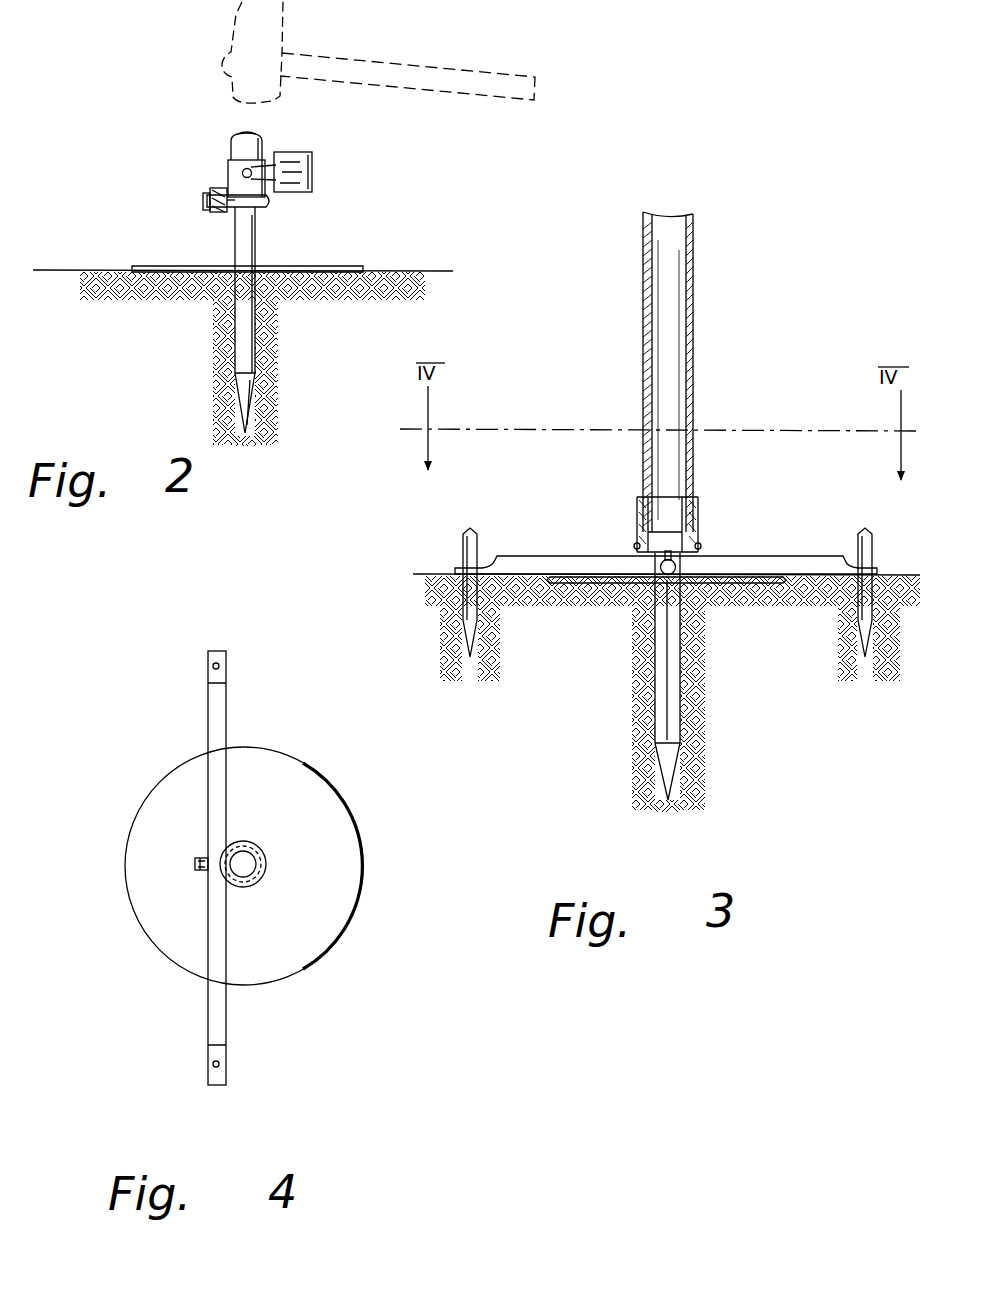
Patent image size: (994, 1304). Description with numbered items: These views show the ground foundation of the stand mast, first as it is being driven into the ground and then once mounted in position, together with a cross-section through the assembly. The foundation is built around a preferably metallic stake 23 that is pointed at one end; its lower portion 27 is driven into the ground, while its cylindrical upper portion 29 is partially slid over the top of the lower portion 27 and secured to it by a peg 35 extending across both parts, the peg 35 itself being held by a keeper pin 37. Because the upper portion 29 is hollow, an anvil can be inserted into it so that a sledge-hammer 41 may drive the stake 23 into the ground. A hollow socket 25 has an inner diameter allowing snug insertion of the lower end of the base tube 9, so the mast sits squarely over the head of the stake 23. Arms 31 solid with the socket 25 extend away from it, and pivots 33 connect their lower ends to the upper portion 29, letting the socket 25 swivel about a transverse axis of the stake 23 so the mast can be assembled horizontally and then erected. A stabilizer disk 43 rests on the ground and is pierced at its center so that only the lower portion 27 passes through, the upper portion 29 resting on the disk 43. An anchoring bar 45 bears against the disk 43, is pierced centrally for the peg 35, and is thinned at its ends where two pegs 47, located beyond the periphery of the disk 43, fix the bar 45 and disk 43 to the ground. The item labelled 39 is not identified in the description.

In FIG. 3, the base tube 9 is at (694, 267).
In FIG. 4, the base tube 9 is at (247, 855).
In FIG. 2, the stake 23 is at (234, 251).
In FIG. 3, the stake 23 is at (662, 648).
In FIG. 2, the hollow socket 25 is at (303, 195).
In FIG. 3, the hollow socket 25 is at (700, 496).
In FIG. 2, the lower portion 27 is at (243, 343).
In FIG. 3, the lower portion 27 is at (660, 709).
In FIG. 2, the upper portion 29 is at (232, 170).
In FIG. 3, the upper portion 29 is at (652, 540).
In FIG. 4, the upper portion 29 is at (268, 862).
In FIG. 2, the arms 31 is at (252, 158).
In FIG. 2, the pivots 33 is at (268, 188).
In FIG. 3, the pivots 33 is at (693, 548).
In FIG. 2, the peg 35 is at (205, 201).
In FIG. 3, the peg 35 is at (676, 566).
In FIG. 4, the peg 35 is at (200, 860).
In FIG. 2, the keeper pin 37 is at (212, 194).
In FIG. 3, the keeper pin 37 is at (636, 552).
In FIG. 4, the keeper pin 37 is at (198, 872).
In FIG. 2, the cap top 39 is at (256, 136).
In FIG. 2, the sledge-hammer 41 is at (337, 57).
In FIG. 2, the stabilizer disk 43 is at (146, 266).
In FIG. 3, the stabilizer disk 43 is at (666, 580).
In FIG. 4, the stabilizer disk 43 is at (312, 783).
In FIG. 2, the anchoring bar 45 is at (220, 212).
In FIG. 3, the anchoring bar 45 is at (786, 559).
In FIG. 4, the anchoring bar 45 is at (215, 714).
In FIG. 3, the pegs 47 is at (479, 560).
In FIG. 4, the pegs 47 is at (222, 667).